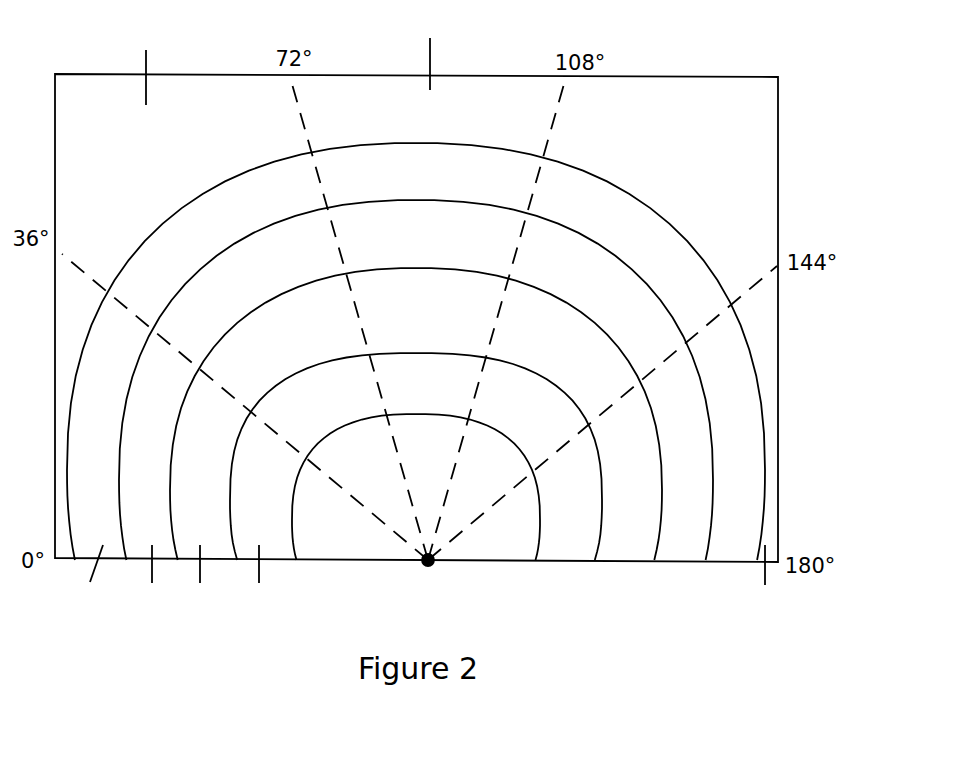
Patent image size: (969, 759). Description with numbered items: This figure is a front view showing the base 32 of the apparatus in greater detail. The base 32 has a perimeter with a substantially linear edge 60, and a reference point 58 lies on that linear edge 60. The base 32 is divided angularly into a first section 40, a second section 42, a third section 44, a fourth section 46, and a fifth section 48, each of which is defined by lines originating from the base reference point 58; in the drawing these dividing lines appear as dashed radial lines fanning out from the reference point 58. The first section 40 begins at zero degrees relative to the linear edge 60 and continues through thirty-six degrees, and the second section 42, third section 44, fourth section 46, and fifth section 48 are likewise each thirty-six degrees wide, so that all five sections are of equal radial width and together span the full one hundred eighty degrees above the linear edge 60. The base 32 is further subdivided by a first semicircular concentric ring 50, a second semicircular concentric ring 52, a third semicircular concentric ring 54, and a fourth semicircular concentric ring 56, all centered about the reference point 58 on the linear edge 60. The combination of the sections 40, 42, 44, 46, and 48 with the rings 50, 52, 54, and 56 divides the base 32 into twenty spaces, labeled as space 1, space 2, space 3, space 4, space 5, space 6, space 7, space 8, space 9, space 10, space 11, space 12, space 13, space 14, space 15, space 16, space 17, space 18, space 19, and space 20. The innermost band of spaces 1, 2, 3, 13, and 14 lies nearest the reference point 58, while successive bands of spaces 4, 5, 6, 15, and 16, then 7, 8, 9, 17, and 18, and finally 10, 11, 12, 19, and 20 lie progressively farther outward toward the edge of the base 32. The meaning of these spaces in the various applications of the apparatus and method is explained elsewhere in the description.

The space 1 is at (426, 381).
The space 2 is at (270, 518).
The space 3 is at (340, 408).
The space 4 is at (426, 309).
The space 5 is at (213, 488).
The space 6 is at (293, 351).
The space 7 is at (426, 243).
The space 8 is at (162, 448).
The space 9 is at (252, 298).
The space 10 is at (426, 176).
The space 11 is at (109, 414).
The space 12 is at (213, 249).
The space 13 is at (557, 518).
The space 14 is at (509, 409).
The space 15 is at (624, 486).
The space 16 is at (537, 356).
The space 17 is at (669, 451).
The space 18 is at (579, 286).
The space 19 is at (726, 421).
The space 20 is at (619, 234).
The base 32 is at (710, 60).
The first section 40 is at (88, 348).
The second section 42 is at (148, 64).
The third section 44 is at (432, 50).
The fourth section 46 is at (742, 134).
The fifth section 48 is at (753, 355).
The first semicircular concentric ring 50 is at (263, 578).
The second semicircular concentric ring 52 is at (203, 578).
The third semicircular concentric ring 54 is at (149, 578).
The fourth semicircular concentric ring 56 is at (89, 578).
The reference point 58 is at (428, 562).
The linear edge 60 is at (768, 580).